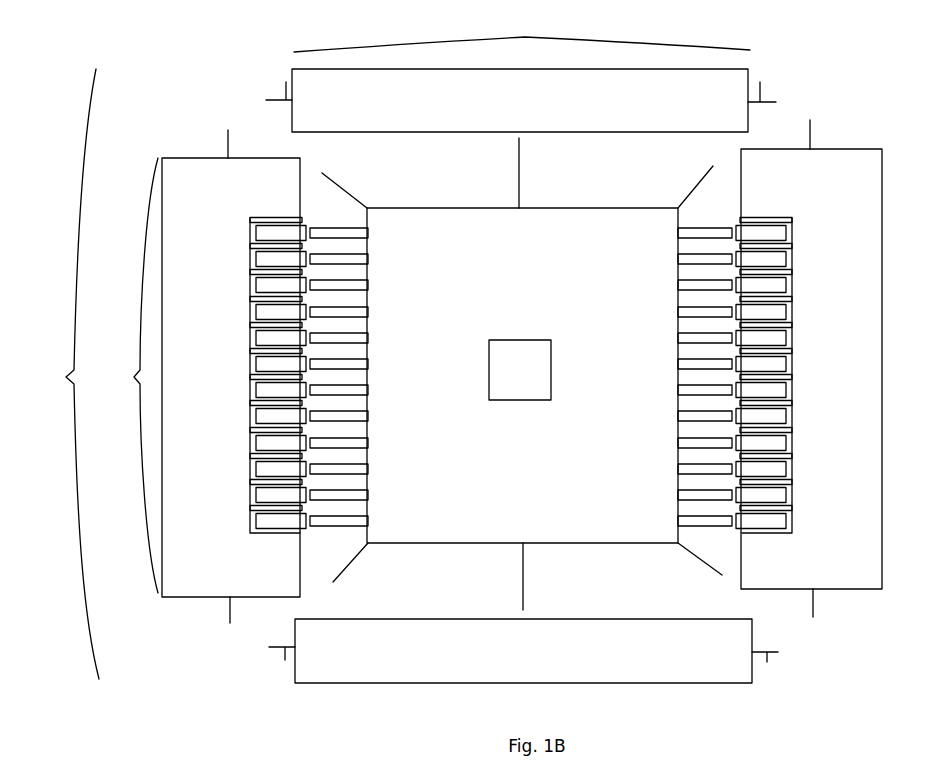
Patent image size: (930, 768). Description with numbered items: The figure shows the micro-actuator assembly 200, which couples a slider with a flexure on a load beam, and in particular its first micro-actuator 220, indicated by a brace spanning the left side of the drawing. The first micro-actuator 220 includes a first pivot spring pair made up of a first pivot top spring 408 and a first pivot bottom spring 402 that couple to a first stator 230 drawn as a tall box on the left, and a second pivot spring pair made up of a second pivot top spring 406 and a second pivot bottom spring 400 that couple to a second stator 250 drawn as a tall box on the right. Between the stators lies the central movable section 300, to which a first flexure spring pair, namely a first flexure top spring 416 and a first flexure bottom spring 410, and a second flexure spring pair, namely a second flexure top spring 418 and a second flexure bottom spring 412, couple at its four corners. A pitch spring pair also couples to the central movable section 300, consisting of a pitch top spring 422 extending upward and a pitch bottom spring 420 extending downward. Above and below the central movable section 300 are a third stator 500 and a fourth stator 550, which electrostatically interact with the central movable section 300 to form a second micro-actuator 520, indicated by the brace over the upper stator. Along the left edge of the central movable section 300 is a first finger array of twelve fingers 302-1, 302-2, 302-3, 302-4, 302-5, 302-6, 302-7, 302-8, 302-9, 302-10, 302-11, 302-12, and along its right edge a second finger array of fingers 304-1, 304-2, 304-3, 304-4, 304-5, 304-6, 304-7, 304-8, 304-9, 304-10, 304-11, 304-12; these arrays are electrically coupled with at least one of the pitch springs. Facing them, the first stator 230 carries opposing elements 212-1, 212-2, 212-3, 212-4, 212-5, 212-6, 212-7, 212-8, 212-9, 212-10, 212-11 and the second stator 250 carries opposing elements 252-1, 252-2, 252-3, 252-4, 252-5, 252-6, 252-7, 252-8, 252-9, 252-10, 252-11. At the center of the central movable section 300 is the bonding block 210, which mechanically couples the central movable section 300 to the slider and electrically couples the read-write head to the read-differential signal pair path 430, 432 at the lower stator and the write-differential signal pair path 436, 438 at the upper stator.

The micro-actuator assembly 200 is at (64, 374).
The first micro-actuator 220 is at (125, 375).
The first stator 230 is at (186, 189).
The second stator 250 is at (834, 188).
The central movable section 300 is at (507, 251).
The bonding block 210 is at (520, 370).
The third stator 500 is at (520, 100).
The fourth stator 550 is at (523, 651).
The second micro-actuator 520 is at (522, 29).
The write-differential signal pair path 438 is at (286, 82).
The write-differential signal pair path 436 is at (760, 82).
The first pivot top spring 408 is at (228, 147).
The second pivot top spring 406 is at (810, 132).
The first pivot bottom spring 402 is at (230, 606).
The second pivot bottom spring 400 is at (813, 606).
The read-differential signal pair path 432 is at (285, 660).
The read-differential signal pair path 430 is at (767, 662).
The first flexure top spring 416 is at (357, 201).
The second flexure top spring 418 is at (690, 198).
The first flexure bottom spring 410 is at (352, 556).
The second flexure bottom spring 412 is at (700, 560).
The pitch top spring 422 is at (521, 192).
The pitch bottom spring 420 is at (523, 560).
The first lead frame lead 1 212-1 is at (250, 242).
The first lead frame lead 2 212-2 is at (250, 268).
The first lead frame lead 3 212-3 is at (250, 294).
The first lead frame lead 4 212-4 is at (250, 321).
The first lead frame lead 5 212-5 is at (250, 347).
The first lead frame lead 6 212-6 is at (250, 373).
The first lead frame lead 7 212-7 is at (250, 399).
The first lead frame lead 8 212-8 is at (250, 425).
The first lead frame lead 9 212-9 is at (250, 452).
The first lead frame lead 10 212-10 is at (250, 478).
The first lead frame lead 11 212-11 is at (250, 504).
The second lead frame lead 1 252-1 is at (790, 245).
The second lead frame lead 2 252-2 is at (790, 271).
The second lead frame lead 3 252-3 is at (790, 297).
The second lead frame lead 4 252-4 is at (790, 324).
The second lead frame lead 5 252-5 is at (790, 350).
The second lead frame lead 6 252-6 is at (790, 376).
The second lead frame lead 7 252-7 is at (790, 402).
The second lead frame lead 8 252-8 is at (790, 428).
The second lead frame lead 9 252-9 is at (790, 455).
The second lead frame lead 10 252-10 is at (790, 481).
The second lead frame lead 11 252-11 is at (790, 507).
The first finger array finger 302-1 is at (368, 235).
The first finger array finger 302-2 is at (368, 261).
The first finger array finger 302-3 is at (368, 287).
The first finger array finger 302-4 is at (368, 314).
The first finger array finger 302-5 is at (368, 340).
The first finger array finger 302-6 is at (368, 366).
The die left bond pad 7 302-7 is at (368, 392).
The die left bond pad 8 302-8 is at (368, 418).
The die left bond pad 9 302-9 is at (368, 445).
The die left bond pad 10 302-10 is at (368, 471).
The die left bond pad 11 302-11 is at (368, 497).
The die left bond pad 12 302-12 is at (368, 523).
The second finger array finger 304-1 is at (677, 235).
The die right bond pad 2 304-2 is at (677, 261).
The die right bond pad 3 304-3 is at (677, 287).
The die right bond pad 4 304-4 is at (677, 314).
The die right bond pad 5 304-5 is at (677, 340).
The die right bond pad 6 304-6 is at (677, 366).
The die right bond pad 7 304-7 is at (677, 392).
The die right bond pad 8 304-8 is at (677, 418).
The die right bond pad 9 304-9 is at (677, 445).
The die right bond pad 10 304-10 is at (677, 471).
The die right bond pad 11 304-11 is at (677, 497).
The die right bond pad 12 304-12 is at (677, 523).